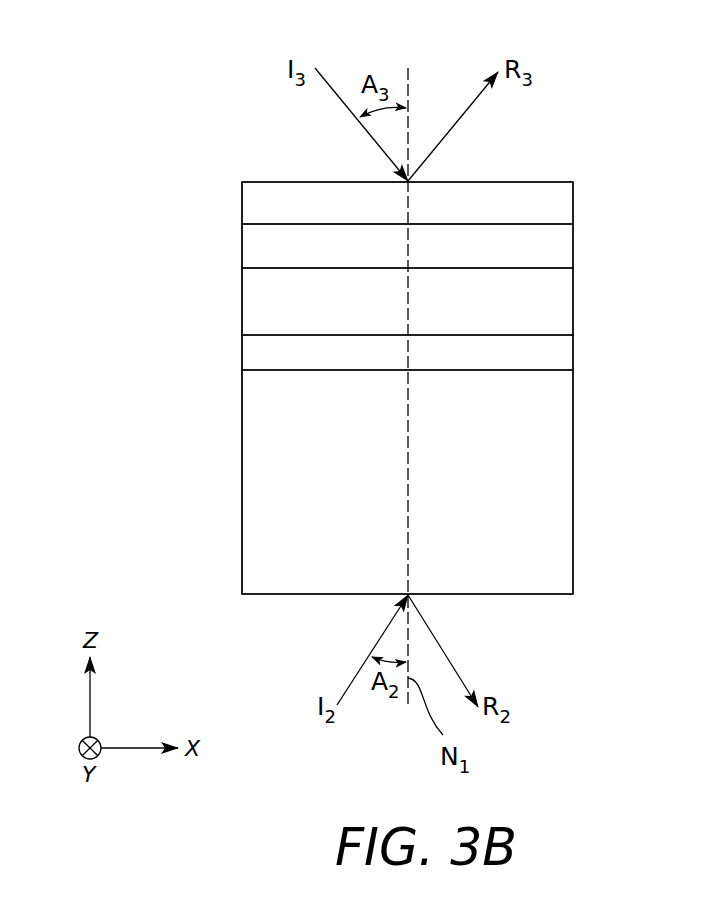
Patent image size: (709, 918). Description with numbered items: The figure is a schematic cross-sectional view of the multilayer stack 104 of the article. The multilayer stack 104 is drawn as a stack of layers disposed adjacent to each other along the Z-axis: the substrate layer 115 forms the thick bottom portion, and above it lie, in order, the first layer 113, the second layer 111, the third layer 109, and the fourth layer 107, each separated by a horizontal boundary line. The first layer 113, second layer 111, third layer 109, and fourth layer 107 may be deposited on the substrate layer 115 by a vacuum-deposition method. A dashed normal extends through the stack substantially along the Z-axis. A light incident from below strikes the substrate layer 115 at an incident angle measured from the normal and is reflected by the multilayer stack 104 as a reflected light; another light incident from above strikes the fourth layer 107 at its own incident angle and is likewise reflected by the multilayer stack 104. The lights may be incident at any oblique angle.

The multilayer stack 104 is at (534, 122).
The fourth layer 107 is at (533, 203).
The third layer 109 is at (536, 248).
The second layer 111 is at (536, 300).
The first layer 113 is at (546, 354).
The substrate layer 115 is at (557, 482).